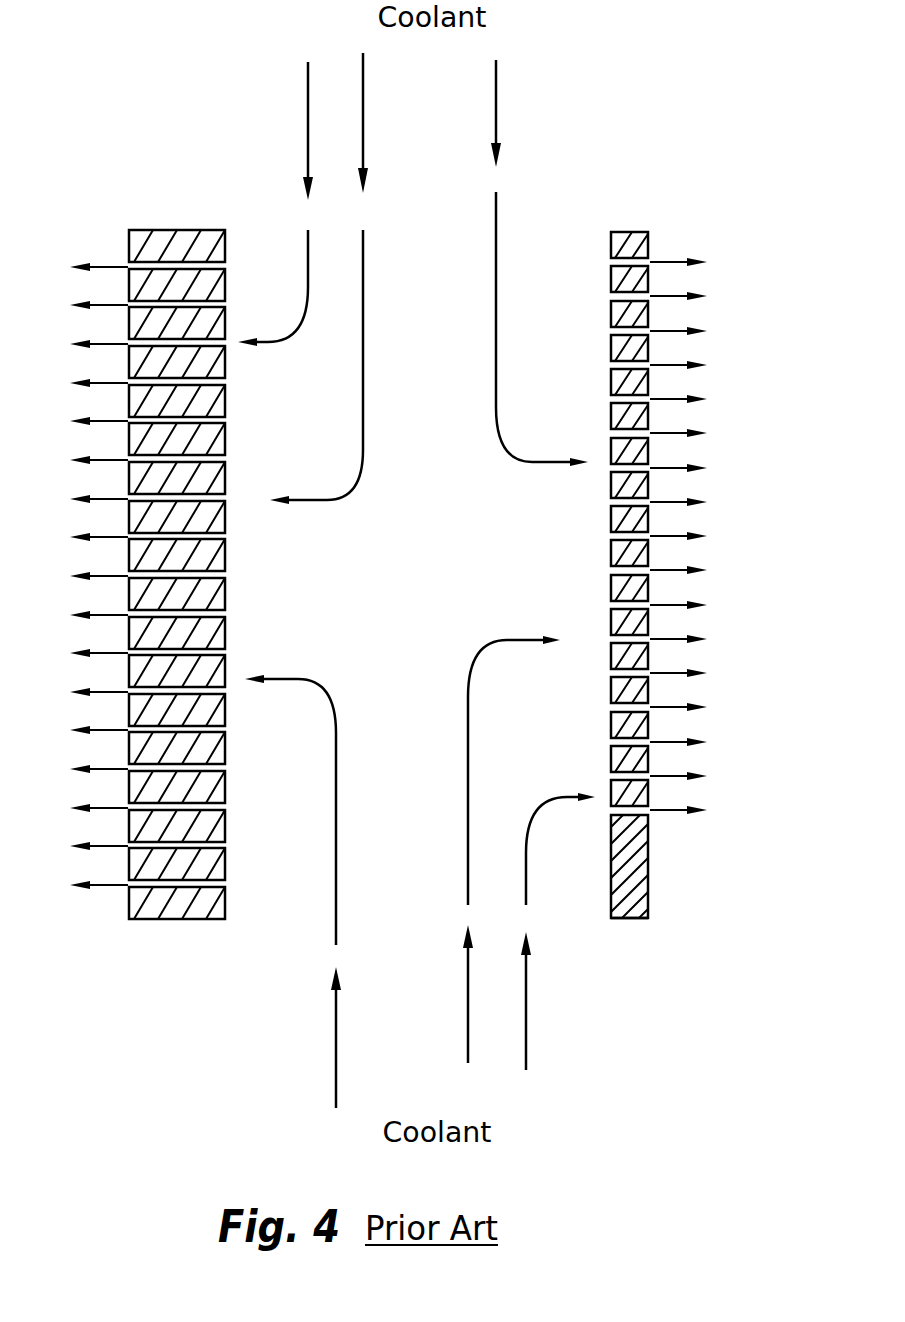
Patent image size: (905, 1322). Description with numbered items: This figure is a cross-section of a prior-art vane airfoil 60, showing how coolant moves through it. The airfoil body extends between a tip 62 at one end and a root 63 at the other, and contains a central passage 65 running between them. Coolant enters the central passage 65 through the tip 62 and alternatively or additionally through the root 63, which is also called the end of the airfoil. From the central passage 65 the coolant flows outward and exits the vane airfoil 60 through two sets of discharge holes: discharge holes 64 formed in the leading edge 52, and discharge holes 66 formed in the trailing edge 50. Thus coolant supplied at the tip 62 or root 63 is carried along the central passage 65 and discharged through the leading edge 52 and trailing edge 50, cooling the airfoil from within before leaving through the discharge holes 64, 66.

The trailing edge 50 is at (148, 902).
The leading edge 52 is at (635, 875).
The vane airfoil 60 is at (801, 336).
The tip 62 is at (640, 232).
The root 63 is at (630, 918).
The discharge holes 64 is at (650, 328).
The central passage 65 is at (425, 270).
The discharge holes 66 is at (126, 537).